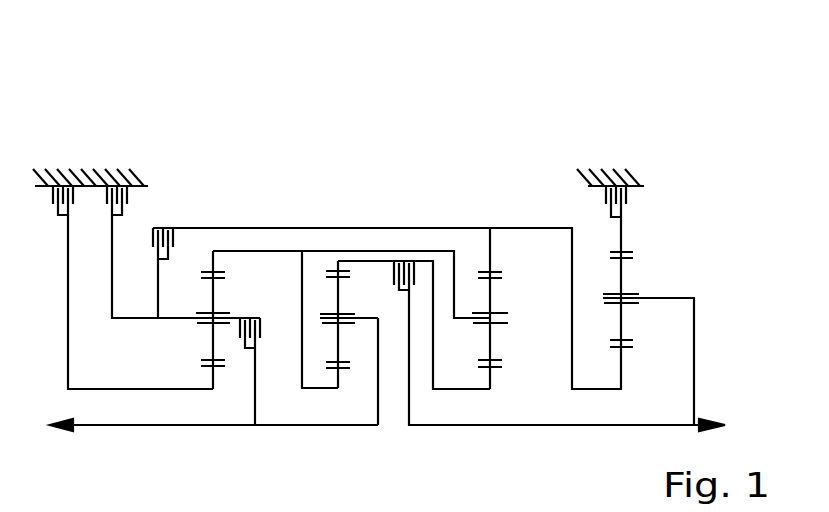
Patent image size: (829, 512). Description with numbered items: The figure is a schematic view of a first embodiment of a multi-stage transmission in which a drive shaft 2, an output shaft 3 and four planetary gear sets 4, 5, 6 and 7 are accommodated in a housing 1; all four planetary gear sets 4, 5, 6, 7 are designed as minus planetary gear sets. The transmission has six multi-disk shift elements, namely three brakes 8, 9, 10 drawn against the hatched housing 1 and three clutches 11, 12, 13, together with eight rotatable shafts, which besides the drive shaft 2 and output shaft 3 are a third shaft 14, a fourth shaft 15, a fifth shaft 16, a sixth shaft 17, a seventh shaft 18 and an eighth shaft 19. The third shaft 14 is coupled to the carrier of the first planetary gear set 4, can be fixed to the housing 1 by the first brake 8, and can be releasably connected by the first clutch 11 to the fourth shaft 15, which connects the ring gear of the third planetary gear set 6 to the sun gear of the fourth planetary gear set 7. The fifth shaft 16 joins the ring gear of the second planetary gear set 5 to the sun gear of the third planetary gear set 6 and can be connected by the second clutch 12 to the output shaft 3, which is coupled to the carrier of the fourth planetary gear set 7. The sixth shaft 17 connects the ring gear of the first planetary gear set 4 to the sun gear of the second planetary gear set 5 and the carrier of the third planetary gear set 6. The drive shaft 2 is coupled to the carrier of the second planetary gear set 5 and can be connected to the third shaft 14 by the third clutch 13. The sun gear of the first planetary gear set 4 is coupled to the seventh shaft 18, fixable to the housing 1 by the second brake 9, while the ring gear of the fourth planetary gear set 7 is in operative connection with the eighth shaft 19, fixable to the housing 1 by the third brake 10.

The housing 1 is at (122, 173).
The drive shaft 2 is at (163, 428).
The output shaft 3 is at (694, 348).
The first planetary gear set 4 is at (215, 163).
The second planetary gear set 5 is at (338, 163).
The third planetary gear set 6 is at (490, 163).
The fourth planetary gear set 7 is at (622, 163).
The first brake 8 is at (105, 185).
The second brake 9 is at (68, 185).
The third brake 10 is at (617, 203).
The first clutch 11 is at (165, 233).
The second clutch 12 is at (400, 275).
The third clutch 13 is at (252, 342).
The third shaft 14 is at (112, 303).
The fourth shaft 15 is at (270, 228).
The fifth shaft 16 is at (463, 389).
The sixth shaft 17 is at (322, 389).
The seventh shaft 18 is at (68, 323).
The eighth shaft 19 is at (621, 232).